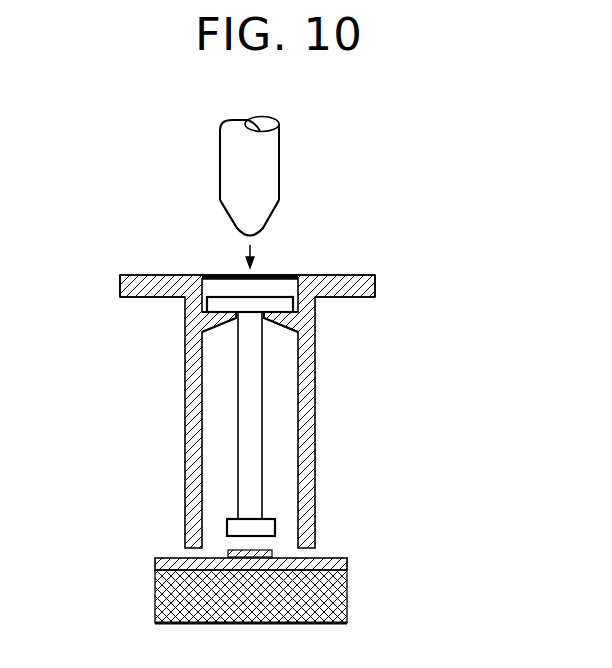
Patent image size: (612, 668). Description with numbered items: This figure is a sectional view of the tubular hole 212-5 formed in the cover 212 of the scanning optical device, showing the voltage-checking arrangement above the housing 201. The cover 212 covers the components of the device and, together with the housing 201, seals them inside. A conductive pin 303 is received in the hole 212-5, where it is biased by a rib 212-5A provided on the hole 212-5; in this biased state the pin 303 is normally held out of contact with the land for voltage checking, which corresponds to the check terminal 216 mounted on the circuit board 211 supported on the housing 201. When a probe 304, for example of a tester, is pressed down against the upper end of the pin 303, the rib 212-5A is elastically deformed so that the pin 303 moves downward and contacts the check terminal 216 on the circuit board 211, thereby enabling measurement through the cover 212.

The probe 304 is at (270, 180).
The conductive pin 303 is at (262, 300).
The cover 212 is at (375, 286).
The hole 212-5 is at (310, 375).
The rib 212-5A is at (217, 327).
The check terminal 216 is at (274, 546).
The circuit board 211 is at (347, 560).
The housing 201 is at (347, 593).